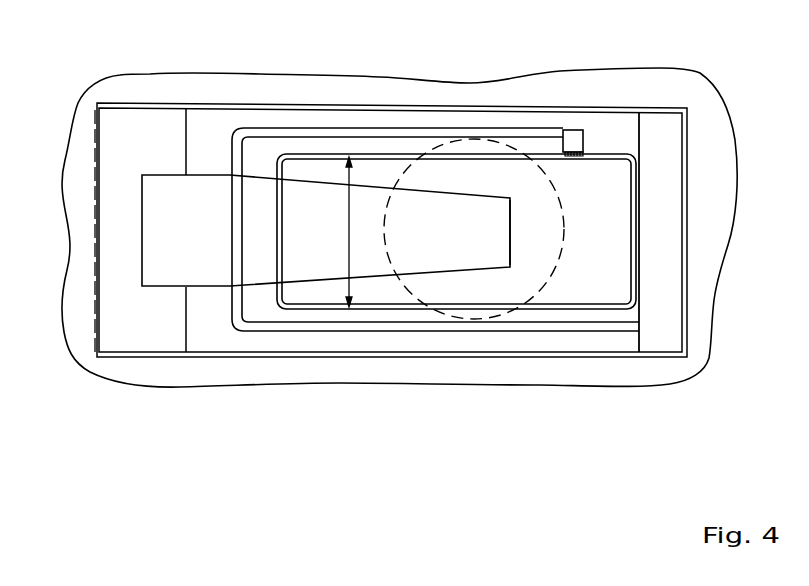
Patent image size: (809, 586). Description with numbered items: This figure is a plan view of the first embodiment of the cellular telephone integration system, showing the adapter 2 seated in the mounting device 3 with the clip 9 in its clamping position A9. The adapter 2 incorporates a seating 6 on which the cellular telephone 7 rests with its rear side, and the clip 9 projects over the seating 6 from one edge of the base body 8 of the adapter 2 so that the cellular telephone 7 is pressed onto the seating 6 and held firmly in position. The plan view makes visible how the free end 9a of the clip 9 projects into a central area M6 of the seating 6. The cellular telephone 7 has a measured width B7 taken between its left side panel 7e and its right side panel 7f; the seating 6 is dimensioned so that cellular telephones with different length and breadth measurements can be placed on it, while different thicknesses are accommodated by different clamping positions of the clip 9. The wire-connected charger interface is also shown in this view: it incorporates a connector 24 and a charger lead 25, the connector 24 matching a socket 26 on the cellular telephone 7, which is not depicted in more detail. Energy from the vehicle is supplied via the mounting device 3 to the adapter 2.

The adapter 2 is at (668, 345).
The mounting device 3 is at (712, 233).
The seating 6 is at (215, 330).
The cellular telephone 7 is at (583, 203).
The left side panel 7e is at (380, 310).
The right side panel 7f is at (402, 142).
The base body 8 is at (645, 345).
The clip 9 is at (452, 225).
The free end 9a is at (510, 238).
The connector 24 is at (572, 138).
The charger lead 25 is at (435, 226).
The socket 26 is at (590, 151).
The clamping position A9 is at (515, 188).
The measured width B7 is at (349, 222).
The central area M6 is at (563, 233).